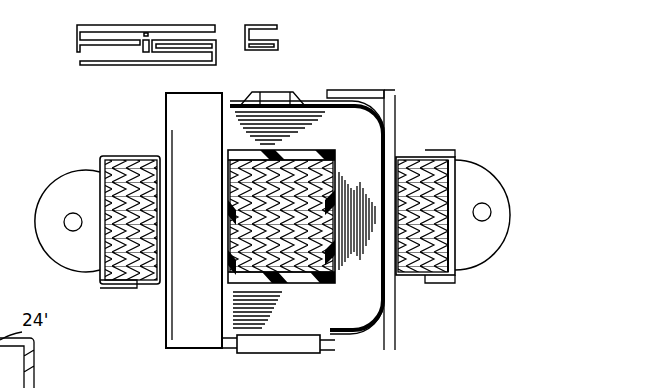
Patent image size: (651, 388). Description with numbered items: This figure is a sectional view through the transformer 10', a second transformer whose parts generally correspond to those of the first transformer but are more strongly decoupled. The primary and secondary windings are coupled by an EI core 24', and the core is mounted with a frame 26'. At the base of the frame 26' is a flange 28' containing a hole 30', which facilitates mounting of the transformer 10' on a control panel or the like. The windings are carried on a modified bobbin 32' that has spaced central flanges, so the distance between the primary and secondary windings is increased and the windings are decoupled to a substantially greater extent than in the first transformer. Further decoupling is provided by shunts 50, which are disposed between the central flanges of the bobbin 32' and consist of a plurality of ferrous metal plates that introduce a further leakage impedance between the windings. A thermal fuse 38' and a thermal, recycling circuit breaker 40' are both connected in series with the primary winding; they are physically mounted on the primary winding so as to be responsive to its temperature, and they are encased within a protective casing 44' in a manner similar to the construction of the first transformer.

The transformer 10' is at (274, 214).
The EI core 24' is at (434, 182).
The frame 26' is at (303, 224).
The flange 28' is at (272, 193).
The hole 30' is at (502, 187).
The modified bobbin 32' is at (296, 232).
The thermal fuse 38' is at (307, 195).
The thermal recycling circuit breaker 40' is at (310, 354).
The protective casing 44' is at (400, 250).
The shunts 50 is at (164, 112).